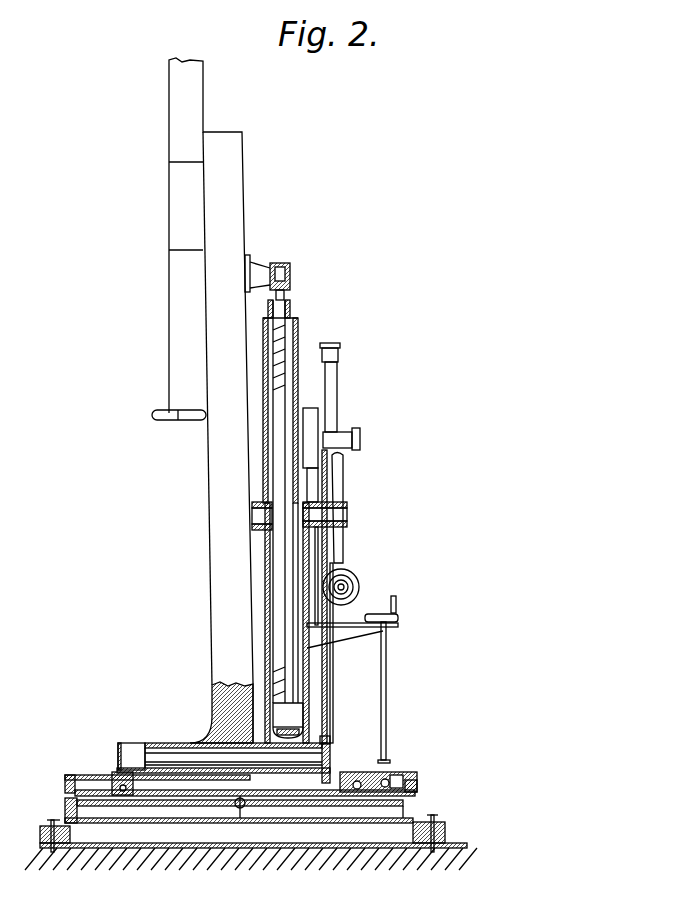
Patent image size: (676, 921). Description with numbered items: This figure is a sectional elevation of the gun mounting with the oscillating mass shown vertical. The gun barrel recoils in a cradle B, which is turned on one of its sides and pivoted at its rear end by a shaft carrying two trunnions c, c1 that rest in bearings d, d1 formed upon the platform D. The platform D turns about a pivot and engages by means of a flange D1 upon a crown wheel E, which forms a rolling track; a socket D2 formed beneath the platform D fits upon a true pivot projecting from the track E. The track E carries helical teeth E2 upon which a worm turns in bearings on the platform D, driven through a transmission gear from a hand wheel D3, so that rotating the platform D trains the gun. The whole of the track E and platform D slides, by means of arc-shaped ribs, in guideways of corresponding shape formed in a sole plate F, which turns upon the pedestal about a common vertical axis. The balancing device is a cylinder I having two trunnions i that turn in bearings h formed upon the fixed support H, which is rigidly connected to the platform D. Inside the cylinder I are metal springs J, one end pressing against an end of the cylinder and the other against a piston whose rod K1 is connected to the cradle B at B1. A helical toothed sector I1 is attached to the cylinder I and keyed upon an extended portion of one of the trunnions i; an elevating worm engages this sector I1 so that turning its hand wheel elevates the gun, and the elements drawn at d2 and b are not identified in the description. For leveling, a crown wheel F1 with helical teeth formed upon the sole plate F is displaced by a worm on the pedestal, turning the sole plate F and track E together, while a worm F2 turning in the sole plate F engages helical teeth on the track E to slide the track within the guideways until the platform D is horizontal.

The cradle B is at (218, 632).
The connection point on cradle B1 is at (258, 273).
The piston rod K1 is at (281, 298).
The cylinder I is at (290, 346).
The metal springs J is at (297, 380).
The helical toothed sector I1 is at (336, 471).
The bearings h is at (265, 502).
The trunnions i is at (258, 513).
The fixed support H is at (270, 583).
The pulley d2 is at (358, 581).
The hand wheel D3 is at (398, 606).
The bearing d1 is at (325, 740).
The trunnion c1 is at (322, 762).
The trunnion c is at (185, 756).
The slide b is at (157, 743).
The bearing d is at (131, 743).
The platform D is at (85, 772).
The flange D1 is at (437, 792).
The socket D2 is at (415, 775).
The crown wheel F1 is at (65, 800).
The crown wheel E is at (170, 797).
The sole plate F is at (133, 828).
The helical teeth E2 is at (105, 800).
The worm F2 is at (240, 808).